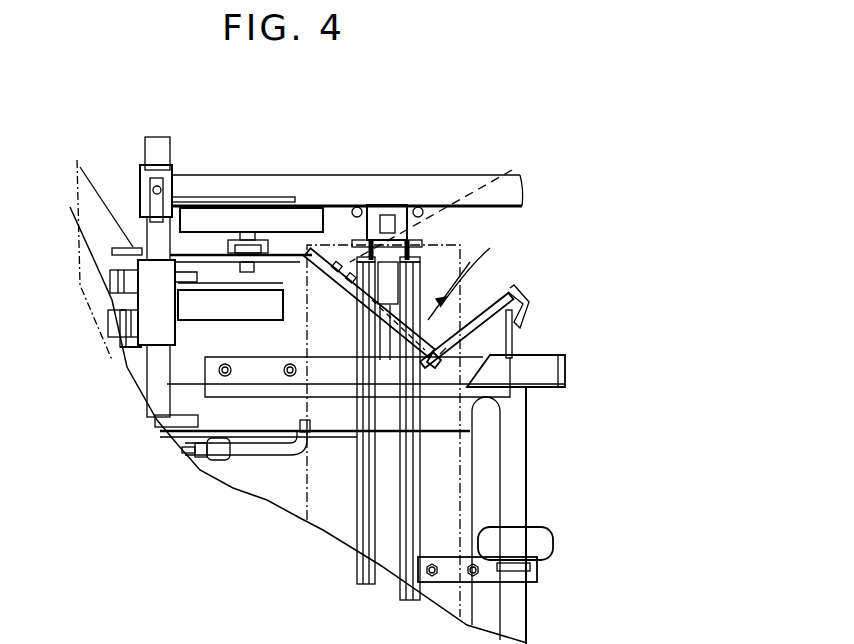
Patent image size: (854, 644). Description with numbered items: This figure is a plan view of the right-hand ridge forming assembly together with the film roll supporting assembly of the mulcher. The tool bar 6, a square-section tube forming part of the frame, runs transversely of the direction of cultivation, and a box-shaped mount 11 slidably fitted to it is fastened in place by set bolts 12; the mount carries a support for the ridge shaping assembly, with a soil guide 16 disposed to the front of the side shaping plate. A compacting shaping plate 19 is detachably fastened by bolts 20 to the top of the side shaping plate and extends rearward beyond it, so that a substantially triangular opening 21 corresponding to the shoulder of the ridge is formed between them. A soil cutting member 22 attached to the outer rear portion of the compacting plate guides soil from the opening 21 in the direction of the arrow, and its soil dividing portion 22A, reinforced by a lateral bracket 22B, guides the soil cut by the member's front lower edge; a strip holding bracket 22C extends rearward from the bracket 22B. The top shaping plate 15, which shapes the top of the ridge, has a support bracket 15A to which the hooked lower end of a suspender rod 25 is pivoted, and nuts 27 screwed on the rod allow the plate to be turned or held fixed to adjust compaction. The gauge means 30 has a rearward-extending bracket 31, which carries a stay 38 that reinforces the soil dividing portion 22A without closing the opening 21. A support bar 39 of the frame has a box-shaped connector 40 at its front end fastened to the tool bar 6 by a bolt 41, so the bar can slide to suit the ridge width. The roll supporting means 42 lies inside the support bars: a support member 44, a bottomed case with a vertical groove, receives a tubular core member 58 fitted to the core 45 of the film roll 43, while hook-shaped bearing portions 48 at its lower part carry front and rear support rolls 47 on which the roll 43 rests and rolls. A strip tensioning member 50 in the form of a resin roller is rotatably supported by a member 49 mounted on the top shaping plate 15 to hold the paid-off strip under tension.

The tool bar 6 is at (148, 387).
The box-shaped mount 11 is at (150, 336).
The set bolt 12 is at (110, 278).
The top shaping plate 15 is at (517, 488).
The support bracket 15A is at (246, 460).
The soil guide 16 is at (93, 207).
The compacting shaping plate 19 is at (320, 372).
The bolts 20 is at (290, 368).
The triangular opening 21 is at (318, 365).
The soil cutting member 22 is at (466, 294).
The soil dividing portion 22A is at (415, 322).
The lateral bracket 22B is at (513, 335).
The strip holding bracket 22C is at (566, 368).
The suspender rod 25 is at (247, 457).
The nuts 27 is at (200, 458).
The gauge means 30 is at (268, 220).
The bracket 31 is at (220, 256).
The stay 38 is at (348, 285).
The support bar 39 is at (308, 187).
The box-shaped connector 40 is at (143, 137).
The bolt 41 is at (174, 175).
The roll supporting means 42 is at (340, 508).
The roll 43 is at (470, 470).
The support member 44 is at (374, 215).
The core 45 is at (412, 333).
The support roll 47 is at (352, 507).
The bearing portion 48 is at (354, 207).
The member 49 is at (495, 572).
The strip tensioning member 50 is at (545, 548).
The tubular core member 58 is at (436, 204).